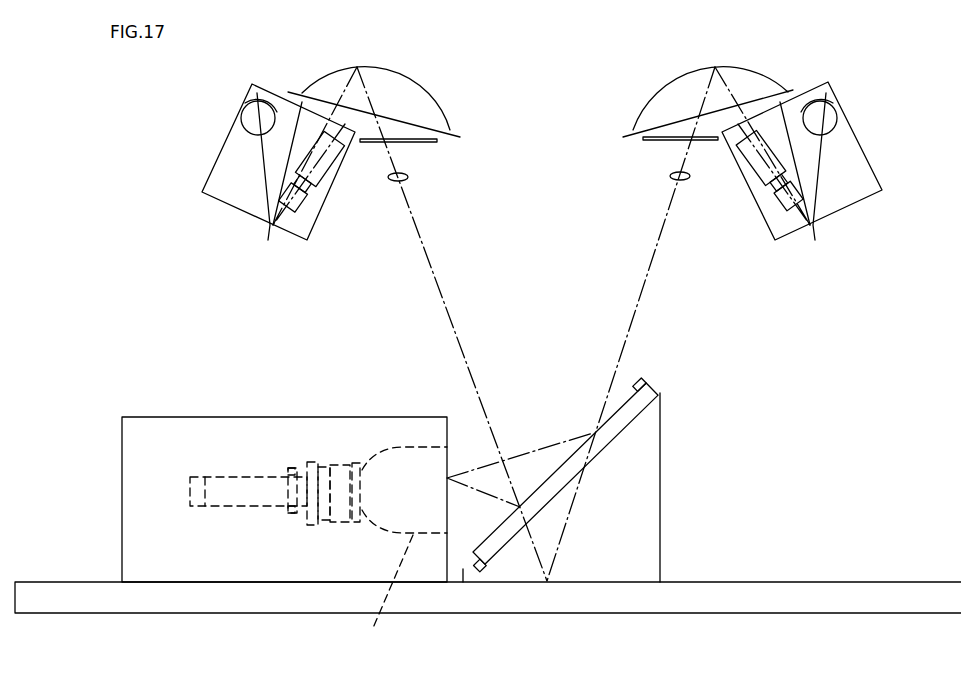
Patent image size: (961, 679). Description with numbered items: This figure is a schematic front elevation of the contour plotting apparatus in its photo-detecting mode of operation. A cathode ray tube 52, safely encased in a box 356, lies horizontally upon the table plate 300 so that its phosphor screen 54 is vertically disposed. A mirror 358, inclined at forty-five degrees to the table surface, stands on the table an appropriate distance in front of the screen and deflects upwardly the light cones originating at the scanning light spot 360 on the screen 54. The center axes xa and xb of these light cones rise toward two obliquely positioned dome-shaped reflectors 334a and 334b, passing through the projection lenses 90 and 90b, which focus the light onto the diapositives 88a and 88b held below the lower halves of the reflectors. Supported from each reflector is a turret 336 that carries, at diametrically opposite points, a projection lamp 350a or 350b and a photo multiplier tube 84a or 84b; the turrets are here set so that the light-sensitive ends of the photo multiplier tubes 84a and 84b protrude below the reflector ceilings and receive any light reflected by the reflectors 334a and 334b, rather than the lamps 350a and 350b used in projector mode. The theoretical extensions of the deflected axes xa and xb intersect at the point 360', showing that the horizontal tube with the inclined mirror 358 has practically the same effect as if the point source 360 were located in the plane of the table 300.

The table plate 300 is at (778, 605).
The box 356 is at (293, 437).
The phosphor screen 54 is at (447, 522).
The cathode ray tube 52 is at (393, 593).
The scanning light spot 360 is at (520, 470).
The point 360' is at (569, 612).
The mirror 358 is at (625, 420).
The turret 336 is at (240, 210).
The projection lamp 350a is at (238, 118).
The projection lamp 350b is at (832, 116).
The photo multiplier tube 84a is at (327, 167).
The photo multiplier tube 84b is at (752, 168).
The dome-shaped reflector 334a is at (390, 73).
The dome-shaped reflector 334b is at (737, 44).
The diapositive 88a is at (440, 143).
The diapositive 88b is at (647, 143).
The projection lens 90 is at (410, 177).
The projection lens 90b is at (703, 182).
The center axis xa is at (467, 357).
The center axis xb is at (640, 302).